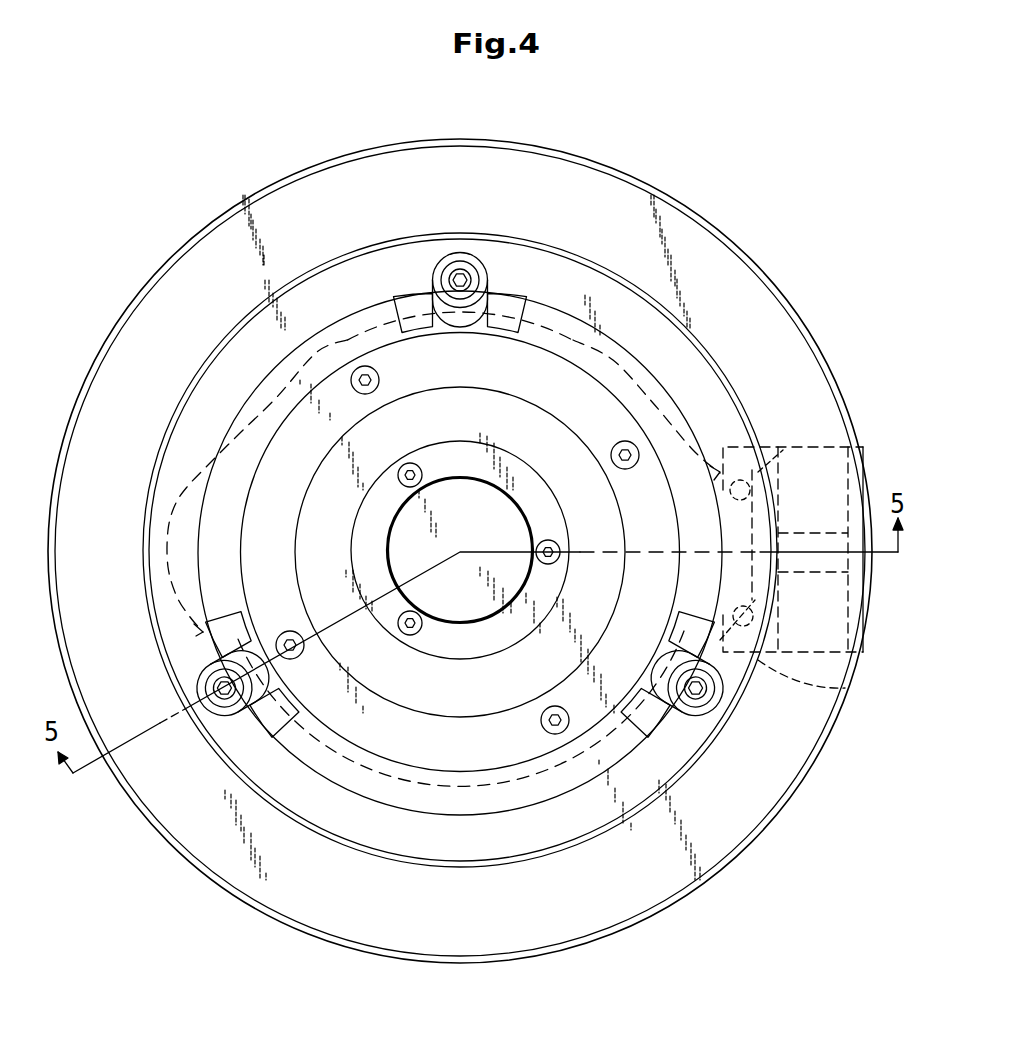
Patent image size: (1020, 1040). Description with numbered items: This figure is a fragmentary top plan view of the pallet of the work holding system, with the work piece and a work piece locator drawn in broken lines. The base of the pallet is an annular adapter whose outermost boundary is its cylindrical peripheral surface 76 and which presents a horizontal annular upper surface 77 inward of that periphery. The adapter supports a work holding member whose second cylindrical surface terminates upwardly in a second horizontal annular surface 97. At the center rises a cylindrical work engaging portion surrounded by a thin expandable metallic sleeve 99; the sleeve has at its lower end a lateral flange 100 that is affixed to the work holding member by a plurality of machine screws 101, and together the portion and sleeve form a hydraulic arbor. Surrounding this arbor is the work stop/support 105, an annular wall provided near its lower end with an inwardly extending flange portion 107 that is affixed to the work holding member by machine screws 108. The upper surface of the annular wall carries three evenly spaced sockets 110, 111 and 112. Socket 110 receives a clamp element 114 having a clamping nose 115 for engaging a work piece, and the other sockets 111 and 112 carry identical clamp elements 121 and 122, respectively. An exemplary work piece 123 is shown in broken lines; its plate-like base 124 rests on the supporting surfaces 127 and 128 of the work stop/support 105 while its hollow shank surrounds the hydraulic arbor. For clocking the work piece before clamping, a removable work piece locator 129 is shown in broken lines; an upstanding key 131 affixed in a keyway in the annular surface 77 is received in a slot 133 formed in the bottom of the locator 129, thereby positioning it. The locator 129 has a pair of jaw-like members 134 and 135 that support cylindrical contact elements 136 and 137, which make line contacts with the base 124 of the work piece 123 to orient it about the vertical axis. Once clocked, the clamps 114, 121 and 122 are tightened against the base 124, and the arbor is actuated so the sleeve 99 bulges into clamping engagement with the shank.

The cylindrical peripheral surface 76 is at (200, 235).
The horizontal annular upper surface 77 is at (470, 205).
The second horizontal annular surface 97 is at (341, 533).
The thin expandable metallic sleeve 99 is at (465, 480).
The lateral flange 100 is at (535, 502).
The machine screws 101 is at (410, 462).
The work stop/support 105 is at (345, 262).
The flange portion 107 is at (275, 553).
The machine screws 108 is at (380, 378).
The socket 110 is at (205, 672).
The socket 111 is at (480, 256).
The socket 112 is at (698, 715).
The clamp element 114 is at (210, 682).
The clamping nose 115 is at (278, 678).
The clamp element 121 is at (482, 322).
The clamp element 122 is at (712, 692).
The work piece 123 is at (677, 327).
The plate-like base 124 is at (665, 385).
The supporting surface 127 is at (683, 488).
The supporting surface 128 is at (505, 315).
The removable work piece locator 129 is at (832, 442).
The upstanding key 131 is at (822, 547).
The slot 133 is at (800, 530).
The jaw-like member 134 is at (763, 447).
The jaw-like member 135 is at (845, 688).
The cylindrical contact element 136 is at (783, 450).
The cylindrical contact element 137 is at (748, 675).